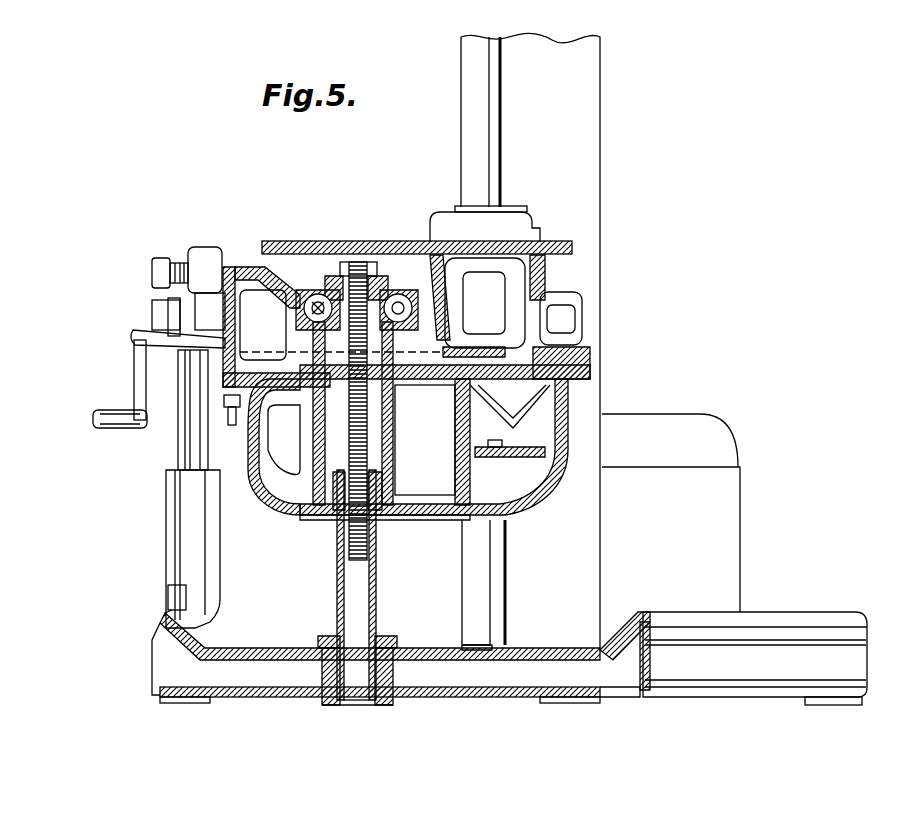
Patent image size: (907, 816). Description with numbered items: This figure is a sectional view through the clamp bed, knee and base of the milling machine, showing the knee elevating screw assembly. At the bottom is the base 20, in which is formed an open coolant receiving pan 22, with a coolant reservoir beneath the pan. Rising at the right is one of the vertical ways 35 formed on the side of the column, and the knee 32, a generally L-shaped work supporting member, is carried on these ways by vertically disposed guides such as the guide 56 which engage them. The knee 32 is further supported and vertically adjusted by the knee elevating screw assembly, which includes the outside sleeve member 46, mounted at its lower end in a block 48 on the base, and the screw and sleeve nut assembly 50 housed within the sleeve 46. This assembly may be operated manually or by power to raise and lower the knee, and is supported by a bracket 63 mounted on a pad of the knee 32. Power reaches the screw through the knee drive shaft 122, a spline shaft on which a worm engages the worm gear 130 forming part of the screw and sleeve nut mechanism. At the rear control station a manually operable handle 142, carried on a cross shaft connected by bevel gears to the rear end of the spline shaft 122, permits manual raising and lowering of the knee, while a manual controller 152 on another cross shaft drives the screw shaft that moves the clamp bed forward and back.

The base 20 is at (742, 660).
The coolant receiving pan 22 is at (272, 642).
The knee 32 is at (562, 412).
The vertical way 35 is at (462, 133).
The outside sleeve member 46 is at (338, 587).
The block 48 is at (382, 675).
The screw and sleeve nut assembly 50 is at (370, 545).
The vertically disposed guide 56 is at (518, 212).
The bracket 63 is at (433, 342).
The knee drive shaft 122 is at (312, 301).
The worm gear 130 is at (395, 262).
The manually operable handle 142 is at (113, 420).
The manual controller 152 is at (162, 272).